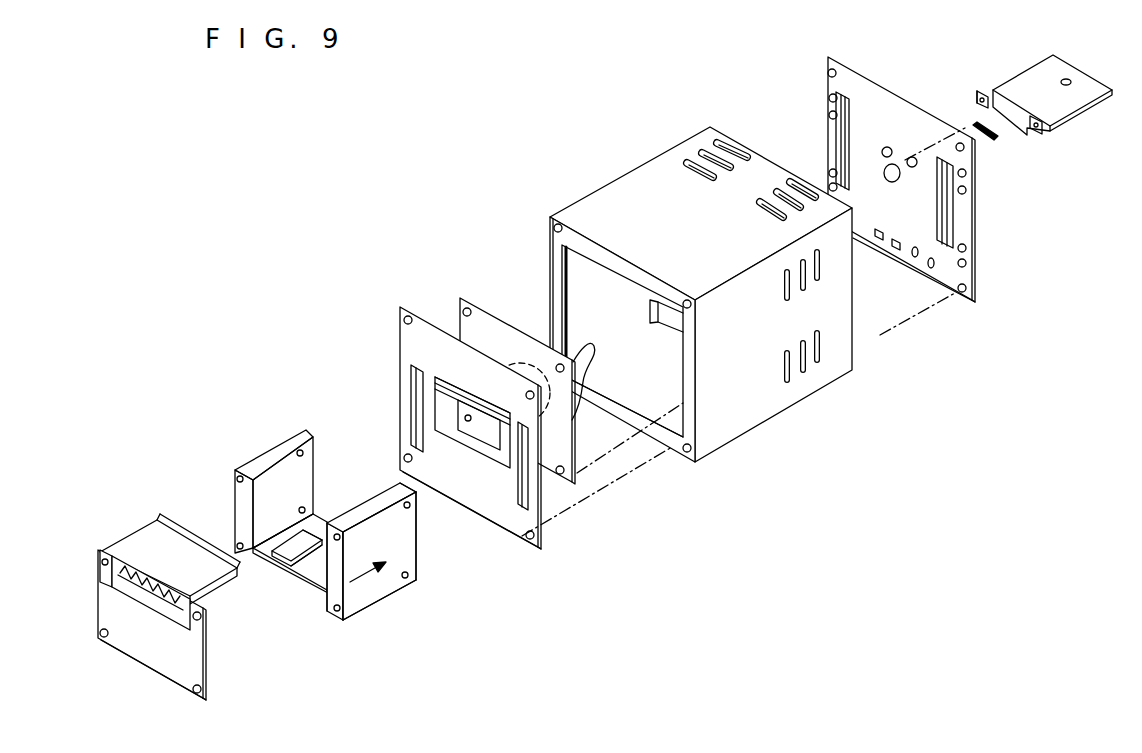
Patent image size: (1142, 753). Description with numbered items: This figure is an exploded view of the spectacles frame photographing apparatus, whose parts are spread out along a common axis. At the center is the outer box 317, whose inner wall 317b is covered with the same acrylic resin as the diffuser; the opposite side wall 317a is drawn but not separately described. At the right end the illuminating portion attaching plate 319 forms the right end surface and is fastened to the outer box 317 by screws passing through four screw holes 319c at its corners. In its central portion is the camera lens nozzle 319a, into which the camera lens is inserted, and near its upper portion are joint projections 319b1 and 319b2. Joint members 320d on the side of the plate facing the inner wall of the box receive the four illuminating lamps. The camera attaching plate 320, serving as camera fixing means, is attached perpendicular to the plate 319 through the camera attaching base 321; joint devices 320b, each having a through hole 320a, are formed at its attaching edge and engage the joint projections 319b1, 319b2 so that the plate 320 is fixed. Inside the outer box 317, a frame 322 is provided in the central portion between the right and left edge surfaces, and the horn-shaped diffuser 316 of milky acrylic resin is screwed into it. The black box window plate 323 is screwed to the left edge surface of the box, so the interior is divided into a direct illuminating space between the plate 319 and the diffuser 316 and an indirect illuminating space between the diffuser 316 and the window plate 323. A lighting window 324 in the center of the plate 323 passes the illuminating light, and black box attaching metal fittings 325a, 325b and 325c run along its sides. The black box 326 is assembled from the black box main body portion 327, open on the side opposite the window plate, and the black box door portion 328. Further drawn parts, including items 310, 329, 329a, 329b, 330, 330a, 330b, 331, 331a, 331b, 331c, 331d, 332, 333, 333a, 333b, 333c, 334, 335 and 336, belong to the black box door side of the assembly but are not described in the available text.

The module assembly 310 is at (190, 637).
The diffuser 316 is at (592, 369).
The outer box 317 is at (662, 298).
The right side wall of housing 317a is at (762, 400).
The inner wall 317b is at (575, 286).
The illuminating portion attaching plate 319 is at (940, 268).
The camera lens nozzle 319a is at (897, 162).
The joint projection 319b1 is at (885, 145).
The joint projection 319b2 is at (912, 168).
The screw holes 319c is at (830, 70).
The camera attaching plate 320 is at (1063, 66).
The through hole 320a is at (983, 88).
The joint devices 320b is at (1045, 130).
The joint members 320d is at (838, 183).
The camera attaching base 321 is at (998, 140).
The frame 322 is at (648, 300).
The black box window plate 323 is at (473, 420).
The lighting window 324 is at (437, 380).
The black box attaching metal fitting 325a is at (410, 392).
The black box attaching metal fitting 325b is at (445, 373).
The black box attaching metal fitting 325c is at (515, 500).
The black box 326 is at (385, 598).
The black box main body portion 327 is at (363, 600).
The black box door portion 328 is at (195, 636).
The U-shaped channel 329 is at (314, 526).
The hole in channel wall 329a is at (300, 450).
The hole in channel wall 329b is at (303, 507).
The right channel wall 330 is at (410, 550).
The top edge of right wall 330a is at (408, 500).
The bottom edge of right wall 330b is at (398, 563).
The left channel wall 331 is at (243, 500).
The hole in left wall 331a is at (237, 478).
The hole in left wall 331b is at (240, 548).
The front edge of right wall 331c is at (338, 612).
The rear edge of right wall 331d is at (405, 540).
The channel bottom plate 332 is at (263, 552).
The opening in bottom plate 333 is at (307, 557).
The edge of opening 333a is at (317, 543).
The edge of opening 333b is at (330, 590).
The inner wall surface 333c is at (280, 512).
The angle bracket 334 is at (130, 562).
The plate side edge 335 is at (213, 655).
The slotted flange 336 is at (122, 540).